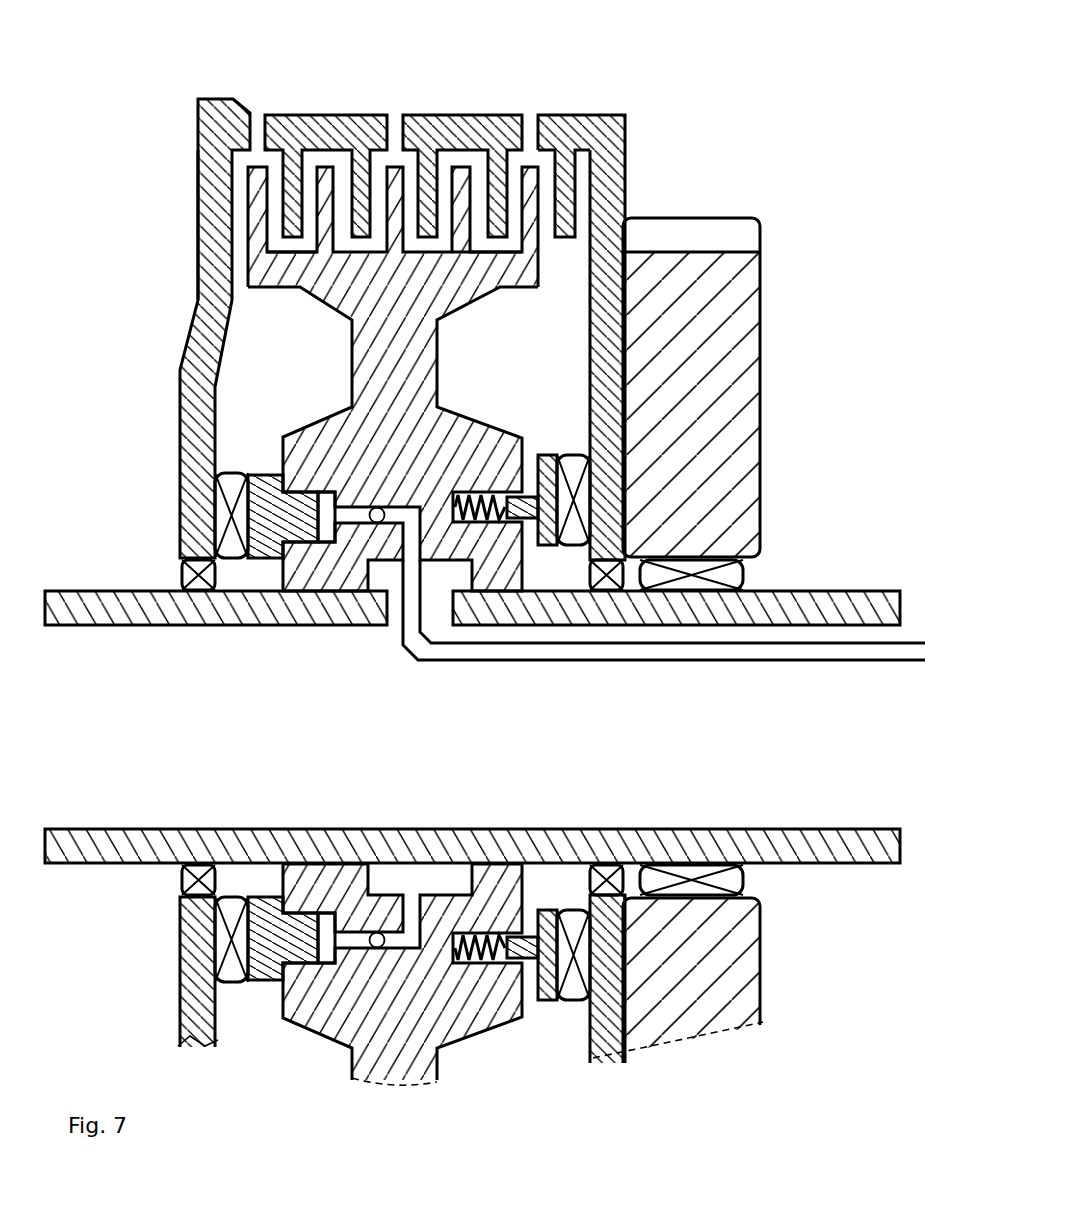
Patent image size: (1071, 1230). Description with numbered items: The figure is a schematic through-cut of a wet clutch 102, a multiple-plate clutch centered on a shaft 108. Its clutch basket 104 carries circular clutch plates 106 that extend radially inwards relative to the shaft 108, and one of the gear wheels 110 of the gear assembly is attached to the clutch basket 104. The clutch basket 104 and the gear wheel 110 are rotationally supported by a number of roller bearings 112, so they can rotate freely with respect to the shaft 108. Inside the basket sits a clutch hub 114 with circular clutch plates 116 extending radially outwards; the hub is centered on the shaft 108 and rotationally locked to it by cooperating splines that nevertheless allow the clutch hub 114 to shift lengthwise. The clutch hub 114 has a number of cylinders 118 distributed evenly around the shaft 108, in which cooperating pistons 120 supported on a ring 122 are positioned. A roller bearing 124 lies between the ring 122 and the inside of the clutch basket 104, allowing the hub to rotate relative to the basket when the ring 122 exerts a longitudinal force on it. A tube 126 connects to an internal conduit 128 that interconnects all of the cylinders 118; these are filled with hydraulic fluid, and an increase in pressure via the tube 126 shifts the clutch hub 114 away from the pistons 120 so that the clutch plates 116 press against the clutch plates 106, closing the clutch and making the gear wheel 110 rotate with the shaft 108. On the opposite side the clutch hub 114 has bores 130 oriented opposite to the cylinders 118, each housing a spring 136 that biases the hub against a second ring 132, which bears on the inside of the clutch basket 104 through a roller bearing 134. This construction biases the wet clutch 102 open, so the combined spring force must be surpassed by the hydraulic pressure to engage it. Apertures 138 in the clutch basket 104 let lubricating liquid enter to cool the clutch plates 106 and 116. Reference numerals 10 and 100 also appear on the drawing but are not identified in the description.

The clutch assembly 10 is at (548, 160).
The hub body 100 is at (455, 1078).
The wet clutch 102 is at (197, 190).
The clutch basket 104 is at (625, 157).
The clutch plates 106 is at (292, 200).
The shaft 108 is at (143, 626).
The gear wheel 110 is at (762, 375).
The roller bearings 112 is at (217, 580).
The clutch hub 114 is at (438, 350).
The clutch plates 116 is at (322, 242).
The cylinders 118 is at (325, 520).
The pistons 120 is at (322, 590).
The ring 122 is at (266, 473).
The roller bearing 124 is at (243, 473).
The tube 126 is at (490, 662).
The internal conduit 128 is at (370, 508).
The bores 130 is at (463, 495).
The second ring 132 is at (543, 455).
The roller bearing 134 is at (572, 458).
The spring 136 is at (512, 498).
The apertures 138 is at (256, 125).